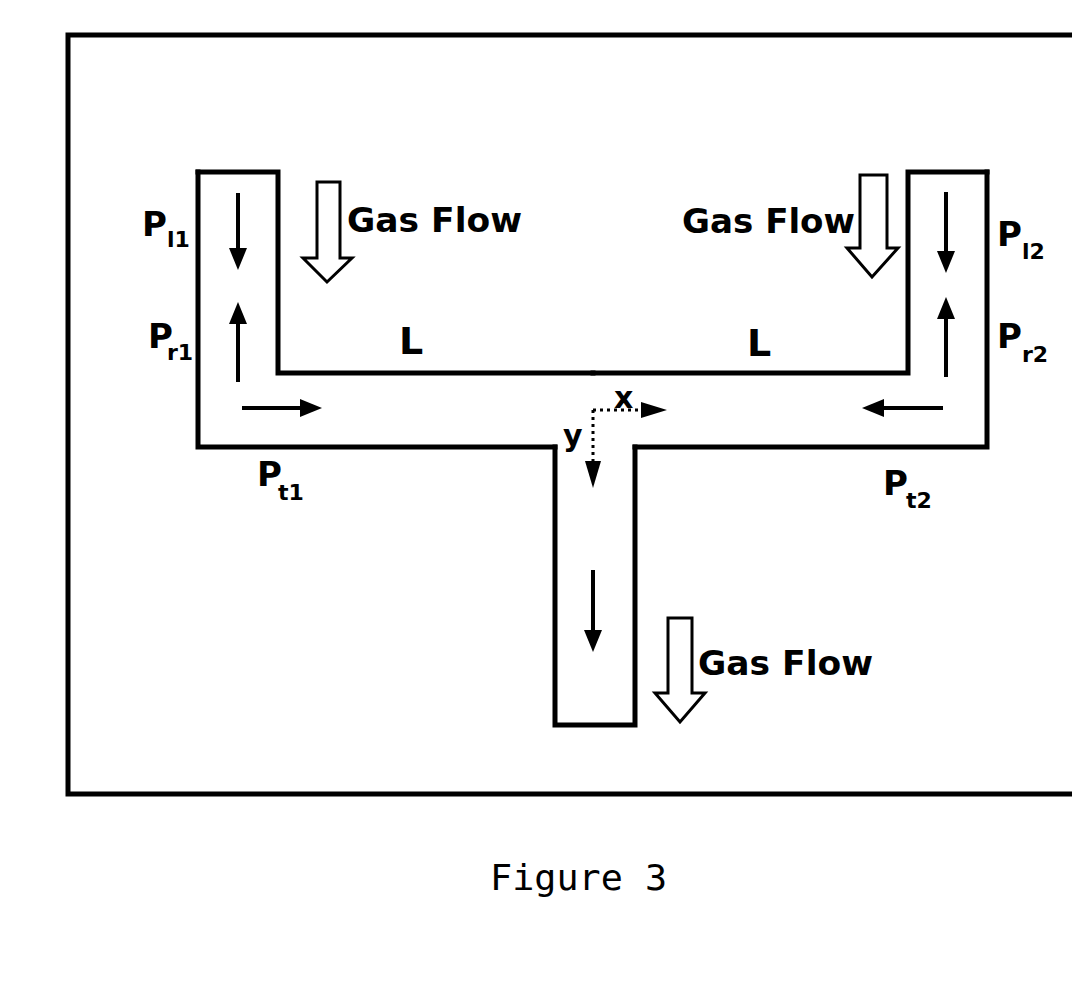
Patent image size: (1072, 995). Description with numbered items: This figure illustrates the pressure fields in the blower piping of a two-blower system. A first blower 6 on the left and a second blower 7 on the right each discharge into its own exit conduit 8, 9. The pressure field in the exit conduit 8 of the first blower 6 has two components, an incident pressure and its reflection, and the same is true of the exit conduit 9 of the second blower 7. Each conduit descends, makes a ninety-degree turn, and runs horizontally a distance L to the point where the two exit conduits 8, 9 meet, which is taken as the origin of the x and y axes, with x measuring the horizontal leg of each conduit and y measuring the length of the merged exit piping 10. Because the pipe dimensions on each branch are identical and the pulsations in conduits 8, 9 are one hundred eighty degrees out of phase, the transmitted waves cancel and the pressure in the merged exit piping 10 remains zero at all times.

The first blower 6 is at (257, 180).
The second blower 7 is at (943, 178).
The exit conduit of the first blower 8 is at (379, 313).
The exit conduit of the second blower 9 is at (812, 314).
The merged exit piping 10 is at (570, 586).